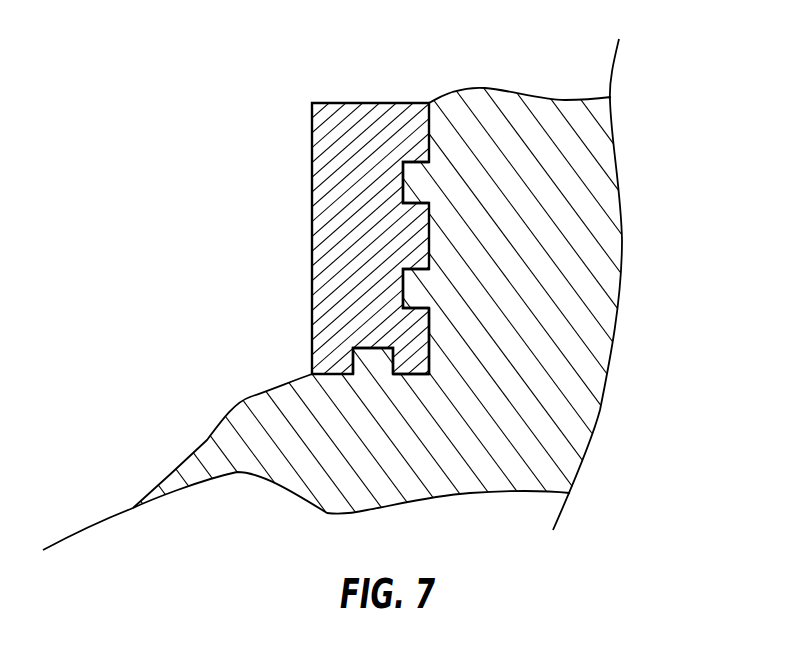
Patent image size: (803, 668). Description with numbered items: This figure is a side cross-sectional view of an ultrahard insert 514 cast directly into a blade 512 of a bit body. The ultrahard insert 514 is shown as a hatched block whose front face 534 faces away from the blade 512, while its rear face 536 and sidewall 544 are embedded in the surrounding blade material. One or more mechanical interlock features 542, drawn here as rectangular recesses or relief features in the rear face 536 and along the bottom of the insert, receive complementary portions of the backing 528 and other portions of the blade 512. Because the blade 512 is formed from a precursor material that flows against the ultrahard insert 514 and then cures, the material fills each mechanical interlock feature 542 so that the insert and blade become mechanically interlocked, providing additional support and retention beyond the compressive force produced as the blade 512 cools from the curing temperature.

The ultrahard insert 514 is at (238, 90).
The blade 512 is at (557, 402).
The backing 528 is at (503, 133).
The front face 534 is at (310, 268).
The mechanical interlock feature 542 is at (418, 184).
The sidewall 544 is at (407, 376).
The rear face 536 is at (432, 332).